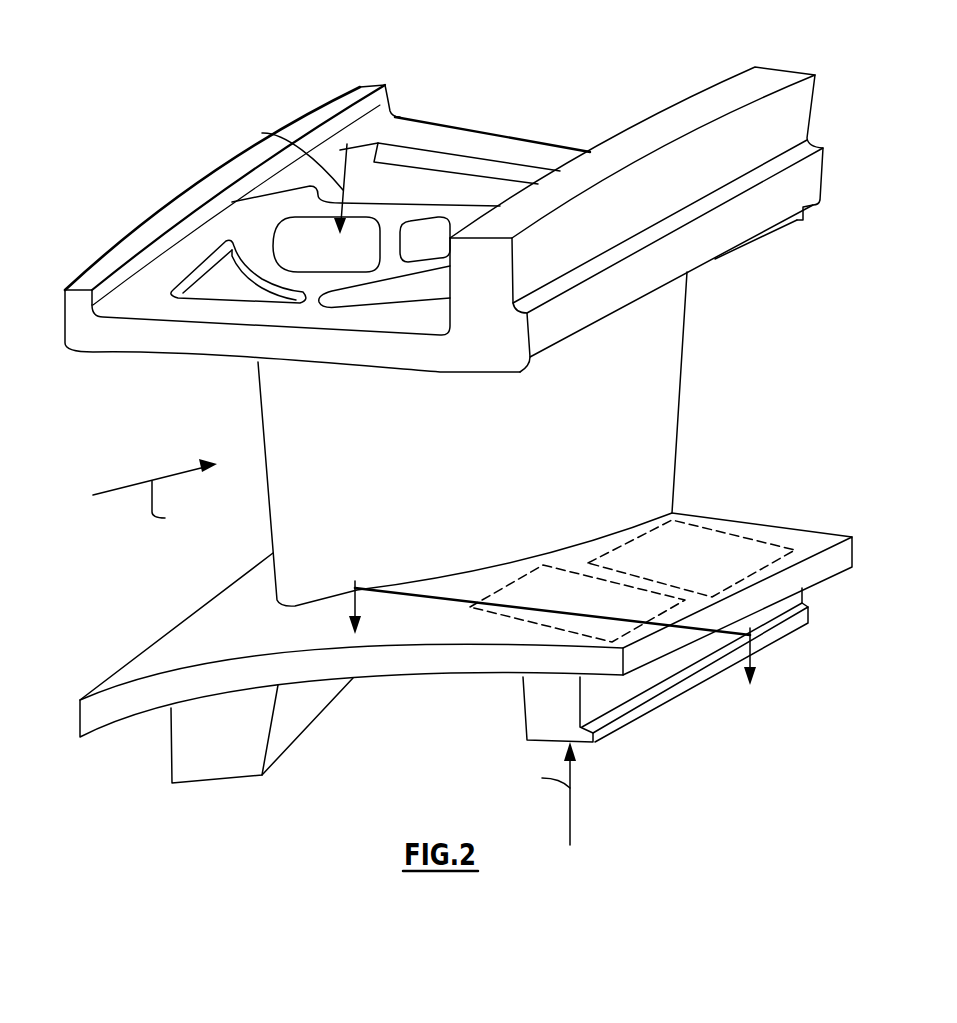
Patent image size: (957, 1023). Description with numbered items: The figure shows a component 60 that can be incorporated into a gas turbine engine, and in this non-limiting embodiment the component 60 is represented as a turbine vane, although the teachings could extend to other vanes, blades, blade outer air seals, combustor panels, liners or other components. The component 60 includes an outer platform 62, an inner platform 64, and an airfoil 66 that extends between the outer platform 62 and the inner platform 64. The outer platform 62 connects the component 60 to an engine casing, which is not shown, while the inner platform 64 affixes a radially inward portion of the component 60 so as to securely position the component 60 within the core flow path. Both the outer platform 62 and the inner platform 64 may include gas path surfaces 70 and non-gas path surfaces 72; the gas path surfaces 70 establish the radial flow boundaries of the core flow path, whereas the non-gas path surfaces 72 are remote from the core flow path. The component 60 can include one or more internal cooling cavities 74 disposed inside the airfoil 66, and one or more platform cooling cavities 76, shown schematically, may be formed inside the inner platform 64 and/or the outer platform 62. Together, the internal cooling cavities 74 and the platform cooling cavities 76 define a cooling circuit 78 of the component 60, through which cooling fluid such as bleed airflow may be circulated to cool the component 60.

The component 60 is at (474, 74).
The outer platform 62 is at (542, 153).
The inner platform 64 is at (500, 655).
The airfoil 66 is at (665, 398).
The gas path surfaces 70 is at (423, 372).
The non-gas path surfaces 72 is at (389, 172).
The internal cooling cavities 74 is at (359, 222).
The platform cooling cavities 76 is at (745, 576).
The cooling circuit 78 is at (462, 166).